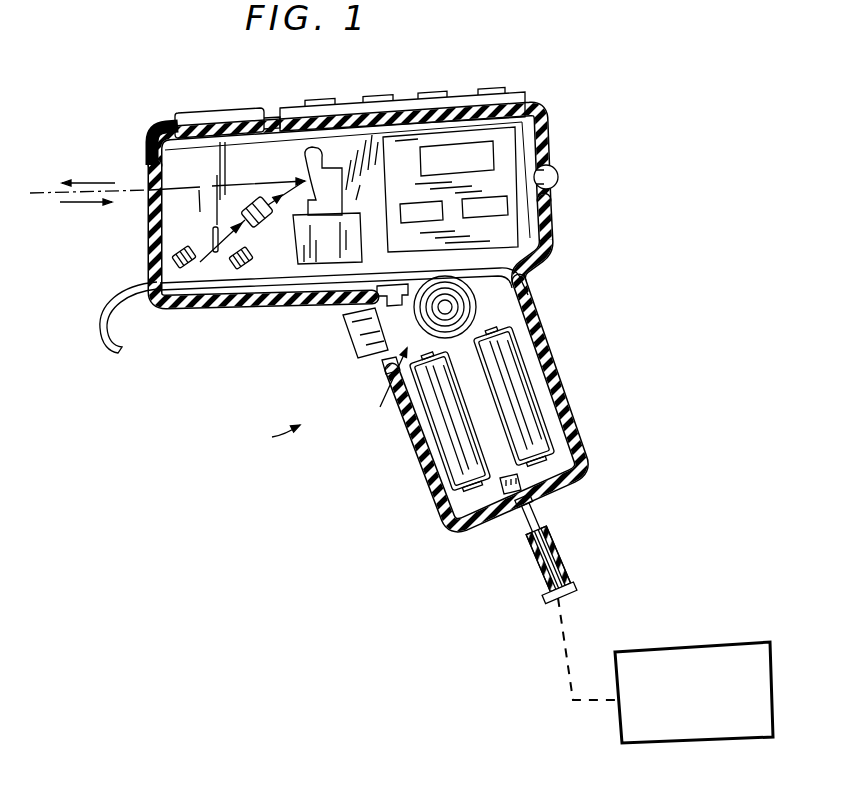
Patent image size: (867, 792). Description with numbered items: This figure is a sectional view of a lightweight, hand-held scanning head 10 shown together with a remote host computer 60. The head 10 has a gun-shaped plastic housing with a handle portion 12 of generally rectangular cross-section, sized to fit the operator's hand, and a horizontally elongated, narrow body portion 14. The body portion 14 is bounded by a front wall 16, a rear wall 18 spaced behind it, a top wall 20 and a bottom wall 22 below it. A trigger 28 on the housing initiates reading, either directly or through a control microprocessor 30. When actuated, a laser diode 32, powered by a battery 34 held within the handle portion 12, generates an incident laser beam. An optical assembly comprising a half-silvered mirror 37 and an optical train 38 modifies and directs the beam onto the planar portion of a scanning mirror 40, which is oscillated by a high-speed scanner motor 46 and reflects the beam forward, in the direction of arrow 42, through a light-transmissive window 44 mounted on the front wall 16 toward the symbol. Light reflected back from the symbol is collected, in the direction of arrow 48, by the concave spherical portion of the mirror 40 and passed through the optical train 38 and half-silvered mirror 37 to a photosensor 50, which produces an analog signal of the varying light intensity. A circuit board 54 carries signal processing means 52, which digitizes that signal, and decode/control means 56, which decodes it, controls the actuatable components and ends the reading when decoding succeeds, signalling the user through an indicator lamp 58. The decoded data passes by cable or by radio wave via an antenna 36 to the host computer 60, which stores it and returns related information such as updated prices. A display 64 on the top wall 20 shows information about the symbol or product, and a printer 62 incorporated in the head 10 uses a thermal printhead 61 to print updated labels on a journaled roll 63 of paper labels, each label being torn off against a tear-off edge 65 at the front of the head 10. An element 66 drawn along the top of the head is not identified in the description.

The scanning head 10 is at (267, 439).
The handle portion 12 is at (586, 457).
The body portion 14 is at (541, 113).
The front wall 16 is at (152, 269).
The rear wall 18 is at (551, 222).
The top wall 20 is at (278, 122).
The bottom wall 22 is at (293, 303).
The trigger 28 is at (357, 343).
The control microprocessor 30 is at (427, 157).
The laser diode 32 is at (212, 298).
The battery 34 is at (510, 375).
The antenna 36 is at (552, 546).
The half-silvered mirror 37 is at (216, 184).
The optical train 38 is at (254, 200).
The scanning mirror 40 is at (318, 160).
The arrow 42 is at (83, 183).
The light-transmissive window 44 is at (134, 170).
The scanner motor 46 is at (303, 257).
The arrow 48 is at (84, 207).
The photosensor 50 is at (190, 252).
The signal processing means 52 is at (496, 208).
The circuit board 54 is at (514, 148).
The decode/control means 56 is at (423, 213).
The indicator lamp 58 is at (559, 178).
The host computer 60 is at (721, 646).
The thermal printhead 61 is at (406, 300).
The printer 62 is at (378, 387).
The journaled roll of paper labels 63 is at (463, 310).
The display 64 is at (218, 118).
The tear-off edge 65 is at (150, 302).
The display panel 66 is at (460, 102).